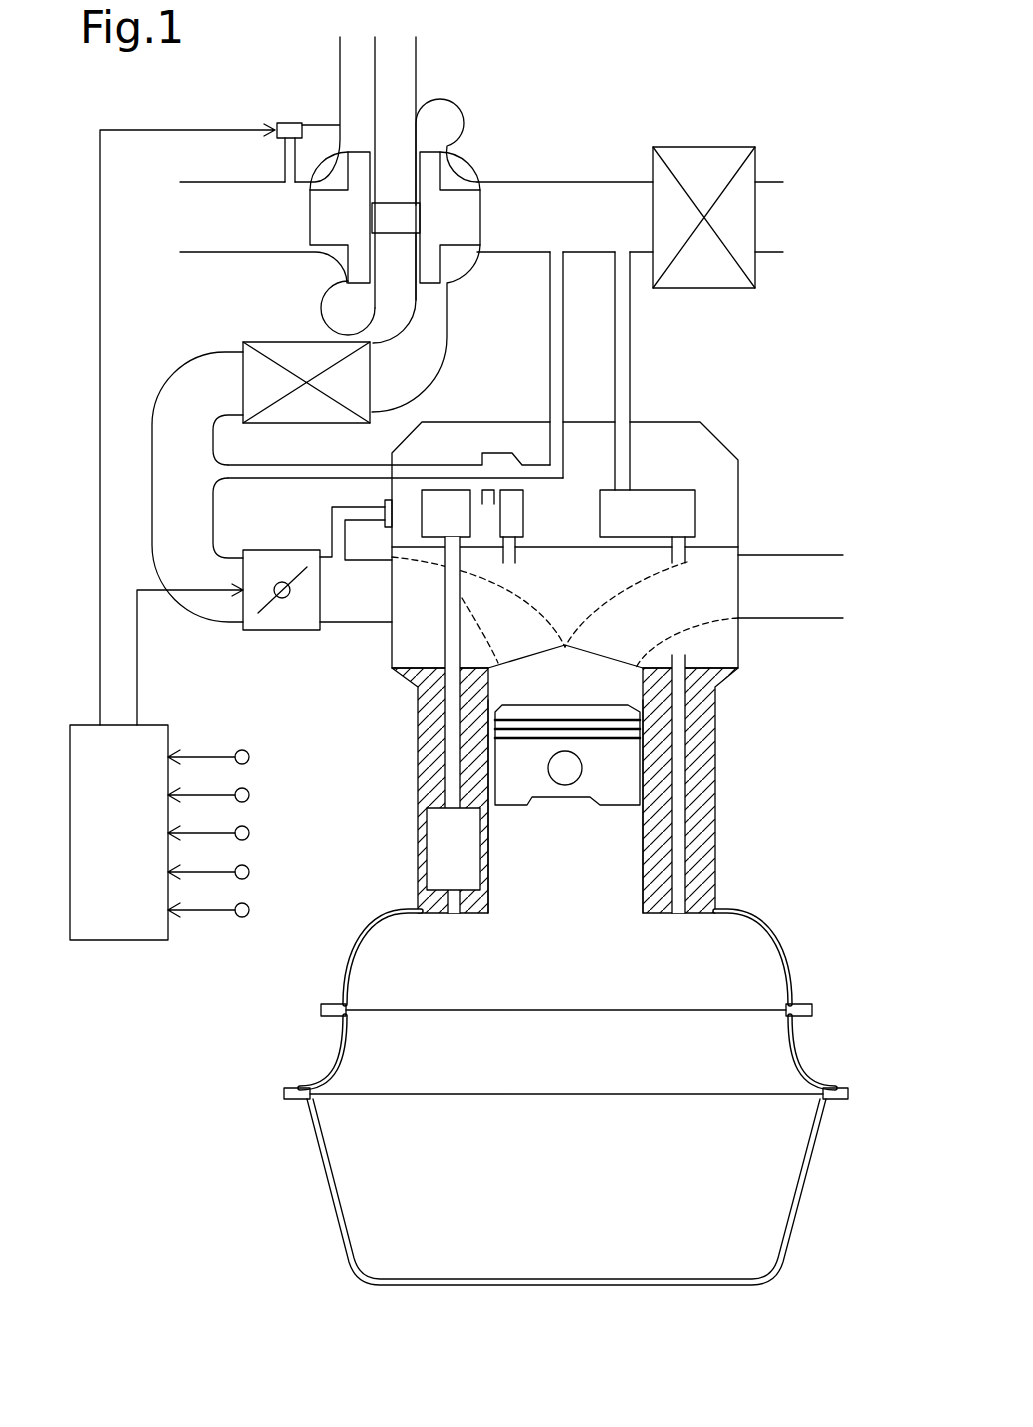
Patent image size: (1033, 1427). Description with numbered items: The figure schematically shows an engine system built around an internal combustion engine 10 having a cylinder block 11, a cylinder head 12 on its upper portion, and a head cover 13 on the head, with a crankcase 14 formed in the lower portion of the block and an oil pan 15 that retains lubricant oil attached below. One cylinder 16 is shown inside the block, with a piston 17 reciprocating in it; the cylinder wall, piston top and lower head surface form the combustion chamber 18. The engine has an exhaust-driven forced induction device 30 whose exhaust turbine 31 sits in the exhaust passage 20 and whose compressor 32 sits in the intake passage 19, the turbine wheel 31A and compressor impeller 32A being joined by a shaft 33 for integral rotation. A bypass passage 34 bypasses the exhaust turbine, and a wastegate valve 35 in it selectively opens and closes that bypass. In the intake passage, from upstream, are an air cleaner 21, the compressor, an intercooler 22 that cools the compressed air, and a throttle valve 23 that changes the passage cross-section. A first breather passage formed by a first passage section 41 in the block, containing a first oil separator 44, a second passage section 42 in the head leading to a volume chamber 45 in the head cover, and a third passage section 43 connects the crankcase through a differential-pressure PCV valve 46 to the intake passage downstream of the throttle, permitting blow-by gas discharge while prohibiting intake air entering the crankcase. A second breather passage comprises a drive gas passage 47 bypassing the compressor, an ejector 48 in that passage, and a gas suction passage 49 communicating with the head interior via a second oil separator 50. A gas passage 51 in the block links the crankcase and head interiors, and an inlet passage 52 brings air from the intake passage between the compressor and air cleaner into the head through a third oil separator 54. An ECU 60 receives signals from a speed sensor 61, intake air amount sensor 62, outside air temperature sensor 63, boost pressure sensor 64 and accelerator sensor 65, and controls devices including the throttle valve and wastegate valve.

The internal combustion engine 10 is at (781, 834).
The cylinder block 11 is at (715, 758).
The cylinder head 12 is at (742, 648).
The head cover 13 is at (720, 434).
The crankcase 14 is at (788, 957).
The oil pan 15 is at (802, 1205).
The cylinder 16 is at (637, 903).
The piston 17 is at (590, 797).
The combustion chamber 18 is at (588, 688).
The intake passage 19 is at (583, 181).
The exhaust passage 20 is at (341, 52).
The air cleaner 21 is at (703, 146).
The intercooler 22 is at (297, 425).
The throttle valve 23 is at (279, 631).
The forced induction device 30 is at (414, 84).
The exhaust turbine 31 is at (320, 303).
The turbine wheel 31A is at (310, 217).
The compressor 32 is at (467, 123).
The compressor impeller 32A is at (480, 217).
The shaft 33 is at (397, 203).
The bypass passage 34 is at (320, 122).
The wastegate valve 35 is at (281, 120).
The first passage section 41 is at (452, 752).
The second passage section 42 is at (455, 607).
The third passage section 43 is at (332, 535).
The first oil separator 44 is at (470, 861).
The volume chamber 45 is at (437, 490).
The PCV valve 46 is at (386, 495).
The drive gas passage 47 is at (550, 323).
The ejector 48 is at (490, 450).
The gas suction passage 49 is at (502, 498).
The second oil separator 50 is at (524, 525).
The gas passage 51 is at (683, 854).
The inlet passage 52 is at (630, 323).
The third oil separator 54 is at (665, 490).
The electric control unit 60 is at (118, 941).
The speed sensor 61 is at (249, 757).
The intake air amount sensor 62 is at (249, 795).
The outside air temperature sensor 63 is at (249, 833).
The boost pressure sensor 64 is at (249, 872).
The accelerator sensor 65 is at (249, 910).